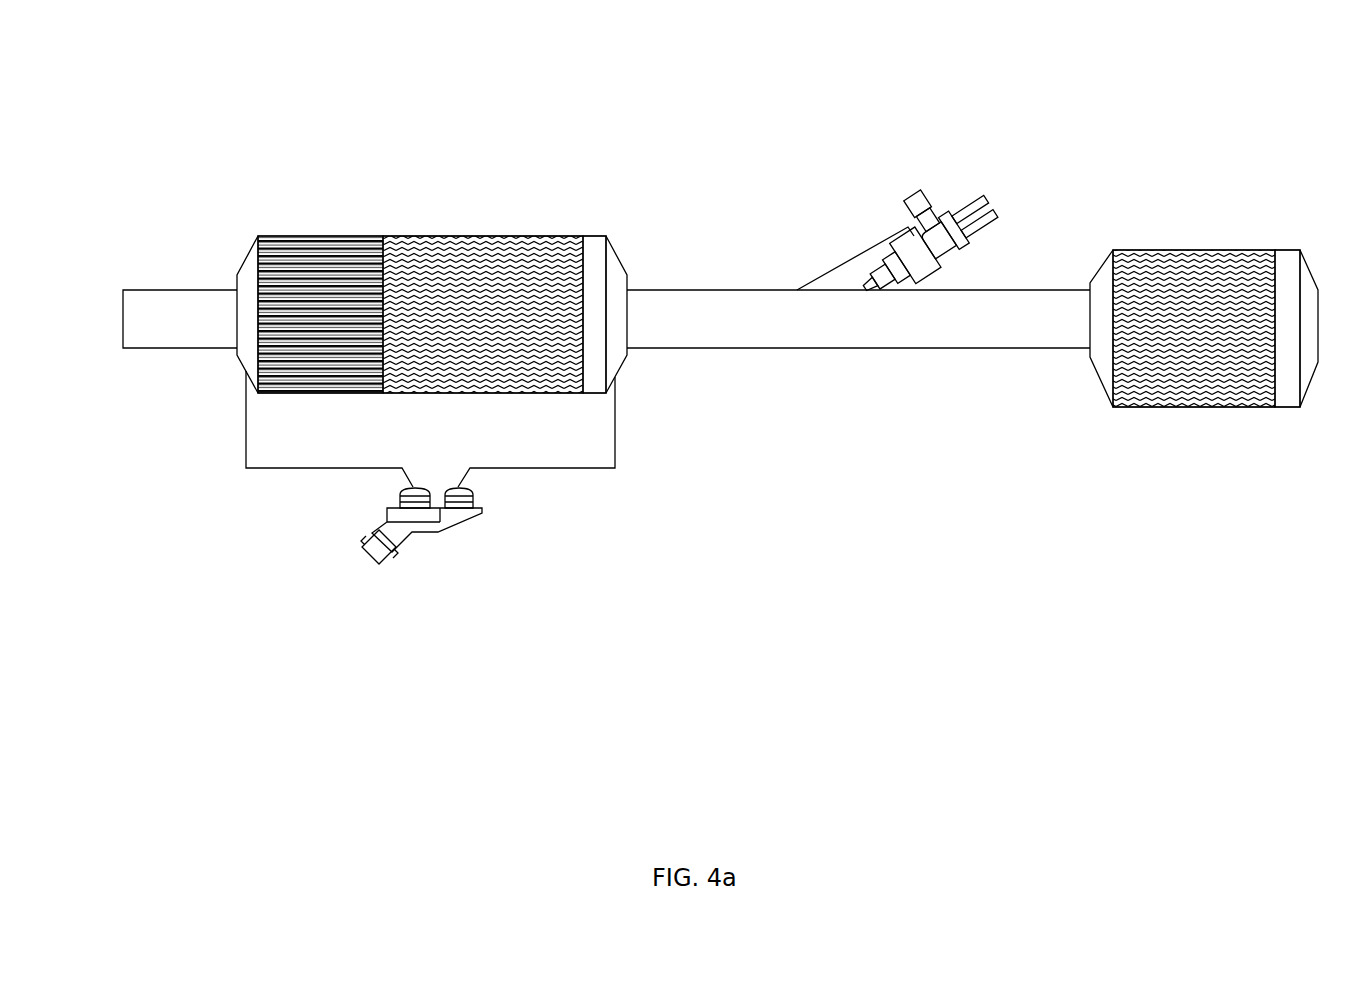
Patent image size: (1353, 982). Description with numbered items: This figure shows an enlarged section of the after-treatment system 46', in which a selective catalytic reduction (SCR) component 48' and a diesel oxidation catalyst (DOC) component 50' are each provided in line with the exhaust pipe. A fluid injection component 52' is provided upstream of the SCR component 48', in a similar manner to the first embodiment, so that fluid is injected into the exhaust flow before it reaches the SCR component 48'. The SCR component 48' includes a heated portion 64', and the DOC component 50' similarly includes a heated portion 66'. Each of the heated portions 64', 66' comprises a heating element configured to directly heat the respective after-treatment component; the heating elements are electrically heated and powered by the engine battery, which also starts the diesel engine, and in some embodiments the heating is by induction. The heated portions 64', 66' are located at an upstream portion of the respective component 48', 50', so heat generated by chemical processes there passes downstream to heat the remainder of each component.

The after-treatment system 46' is at (606, 439).
The selective catalytic reduction (SCR) component 48' is at (432, 340).
The diesel oxidation catalyst (DOC) component 50' is at (1204, 222).
The fluid injection component 52' is at (906, 208).
The heated portion 64' is at (621, 400).
The heated portion 66' is at (1312, 409).